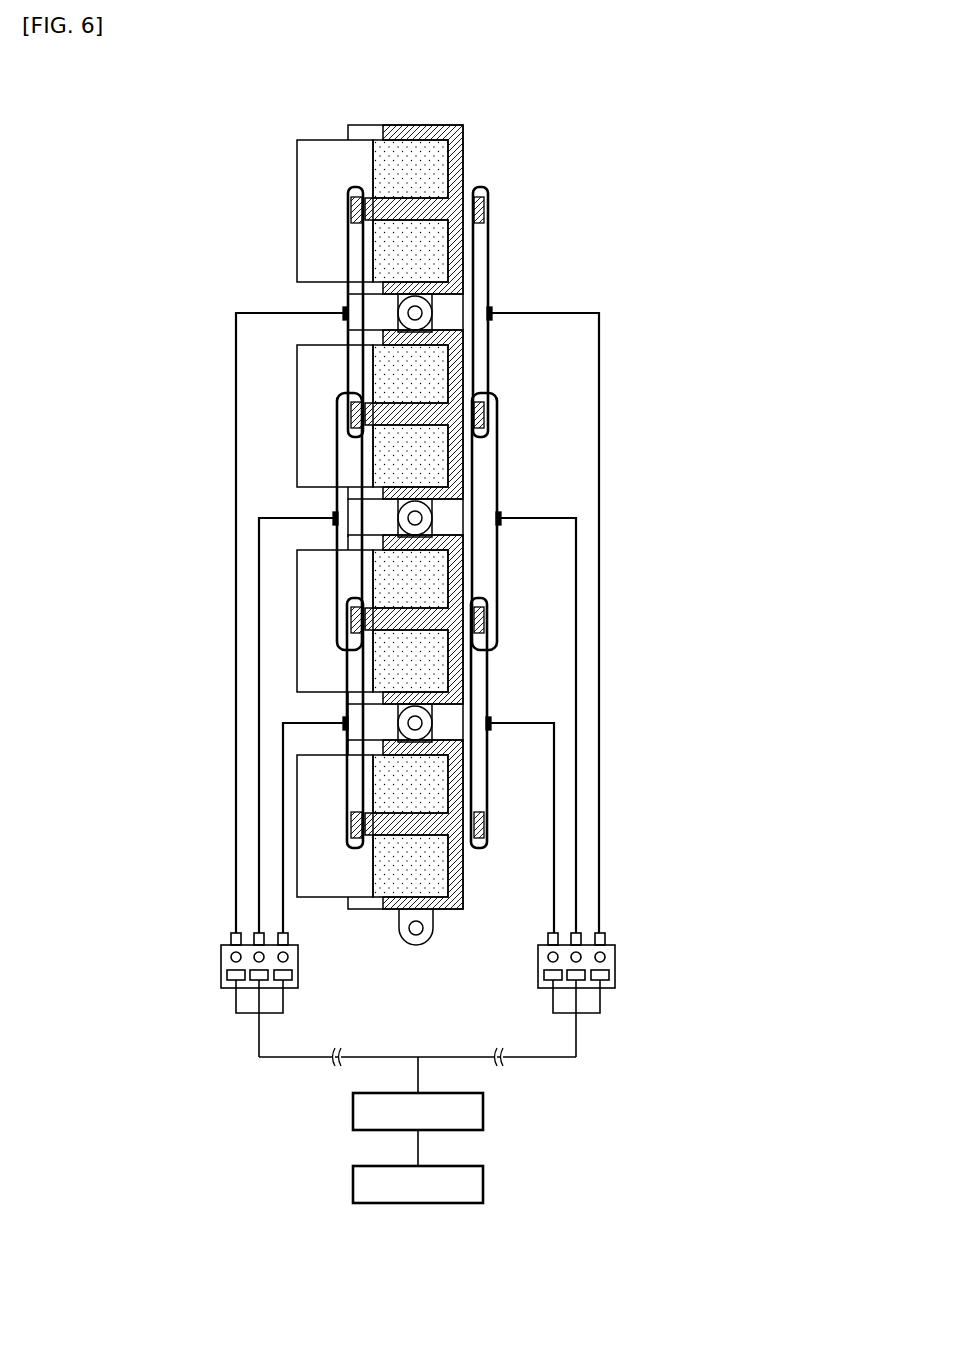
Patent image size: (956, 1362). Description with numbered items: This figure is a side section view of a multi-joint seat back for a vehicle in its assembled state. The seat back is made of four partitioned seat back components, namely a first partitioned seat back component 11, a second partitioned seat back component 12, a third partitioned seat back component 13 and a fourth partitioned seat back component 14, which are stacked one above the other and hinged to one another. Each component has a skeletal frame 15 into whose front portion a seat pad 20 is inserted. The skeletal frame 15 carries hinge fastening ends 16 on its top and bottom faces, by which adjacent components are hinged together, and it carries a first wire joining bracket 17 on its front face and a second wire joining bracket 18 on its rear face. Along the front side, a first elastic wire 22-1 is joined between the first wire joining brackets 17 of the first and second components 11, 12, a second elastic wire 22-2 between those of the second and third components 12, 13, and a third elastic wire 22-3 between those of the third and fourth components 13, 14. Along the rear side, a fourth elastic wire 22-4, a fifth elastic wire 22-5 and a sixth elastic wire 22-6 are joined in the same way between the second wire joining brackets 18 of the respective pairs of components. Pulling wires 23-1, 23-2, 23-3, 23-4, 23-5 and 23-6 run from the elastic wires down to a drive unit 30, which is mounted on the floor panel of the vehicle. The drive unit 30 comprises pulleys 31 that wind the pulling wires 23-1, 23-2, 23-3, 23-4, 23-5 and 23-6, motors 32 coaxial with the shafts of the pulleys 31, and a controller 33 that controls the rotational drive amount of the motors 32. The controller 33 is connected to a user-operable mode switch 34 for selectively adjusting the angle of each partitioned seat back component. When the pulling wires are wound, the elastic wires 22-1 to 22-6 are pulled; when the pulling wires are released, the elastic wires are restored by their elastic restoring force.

The first partitioned seat back component 11 is at (376, 179).
The second partitioned seat back component 12 is at (286, 413).
The third partitioned seat back component 13 is at (286, 613).
The fourth partitioned seat back component 14 is at (286, 823).
The skeletal frame 15 is at (460, 155).
The hinge fastening ends 16 is at (414, 312).
The first wire joining bracket 17 is at (357, 203).
The second wire joining bracket 18 is at (478, 207).
The seat pad 20 is at (408, 148).
The first elastic wire 22-1 is at (348, 260).
The second elastic wire 22-2 is at (338, 464).
The third elastic wire 22-3 is at (347, 672).
The fourth elastic wire 22-4 is at (490, 288).
The fifth elastic wire 22-5 is at (497, 463).
The sixth elastic wire 22-6 is at (489, 680).
The pulling wire 23-1 is at (236, 343).
The pulling wire 23-2 is at (259, 541).
The pulling wire 23-3 is at (283, 755).
The pulling wire 23-4 is at (599, 360).
The pulling wire 23-5 is at (576, 546).
The pulling wire 23-6 is at (554, 818).
The drive unit 30 is at (456, 1068).
The pulleys 31 is at (602, 958).
The motors 32 is at (592, 982).
The controller 33 is at (484, 1110).
The mode switch 34 is at (461, 1184).